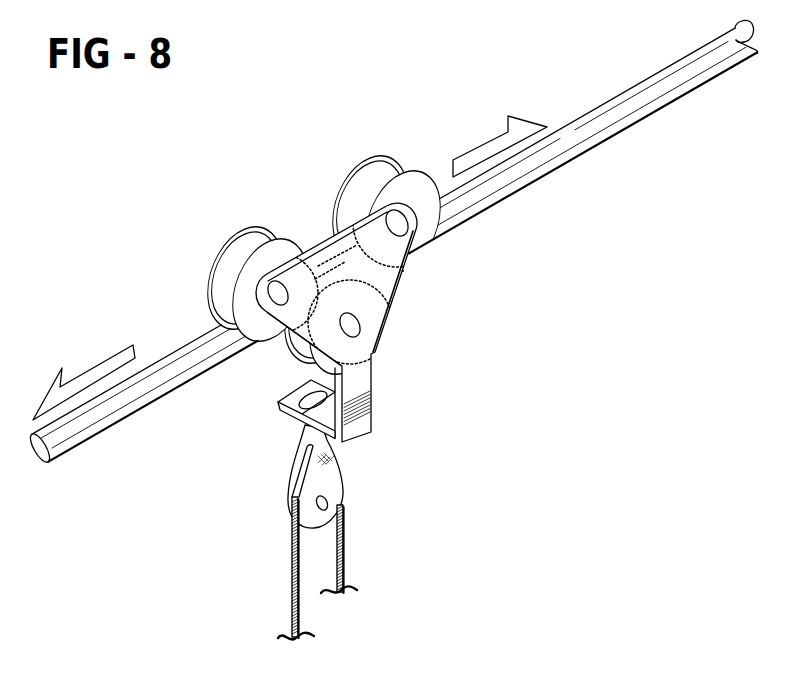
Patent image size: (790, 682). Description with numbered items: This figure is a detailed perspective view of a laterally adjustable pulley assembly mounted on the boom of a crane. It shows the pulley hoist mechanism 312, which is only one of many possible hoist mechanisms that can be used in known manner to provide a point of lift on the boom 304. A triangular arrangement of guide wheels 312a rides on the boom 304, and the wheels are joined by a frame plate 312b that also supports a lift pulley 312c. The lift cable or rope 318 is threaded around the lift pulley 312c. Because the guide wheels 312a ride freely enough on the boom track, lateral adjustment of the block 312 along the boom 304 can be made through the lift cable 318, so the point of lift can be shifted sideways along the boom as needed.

The boom 304 is at (597, 117).
The pulley hoist mechanism 312 is at (291, 163).
The guide wheels 312a is at (362, 180).
The frame plate 312b is at (360, 384).
The lift pulley 312c is at (343, 491).
The lift cable 318 is at (292, 562).